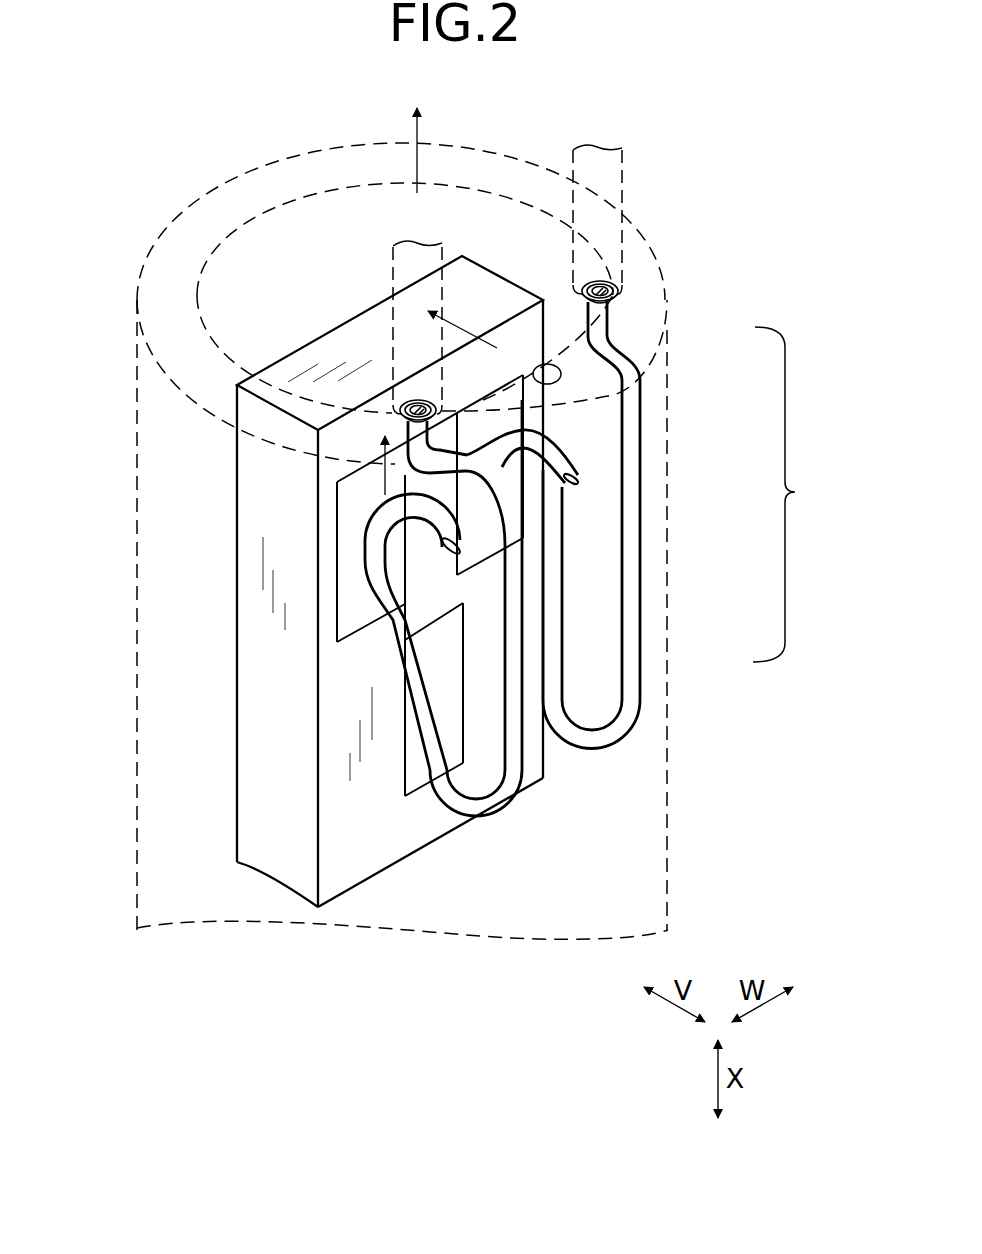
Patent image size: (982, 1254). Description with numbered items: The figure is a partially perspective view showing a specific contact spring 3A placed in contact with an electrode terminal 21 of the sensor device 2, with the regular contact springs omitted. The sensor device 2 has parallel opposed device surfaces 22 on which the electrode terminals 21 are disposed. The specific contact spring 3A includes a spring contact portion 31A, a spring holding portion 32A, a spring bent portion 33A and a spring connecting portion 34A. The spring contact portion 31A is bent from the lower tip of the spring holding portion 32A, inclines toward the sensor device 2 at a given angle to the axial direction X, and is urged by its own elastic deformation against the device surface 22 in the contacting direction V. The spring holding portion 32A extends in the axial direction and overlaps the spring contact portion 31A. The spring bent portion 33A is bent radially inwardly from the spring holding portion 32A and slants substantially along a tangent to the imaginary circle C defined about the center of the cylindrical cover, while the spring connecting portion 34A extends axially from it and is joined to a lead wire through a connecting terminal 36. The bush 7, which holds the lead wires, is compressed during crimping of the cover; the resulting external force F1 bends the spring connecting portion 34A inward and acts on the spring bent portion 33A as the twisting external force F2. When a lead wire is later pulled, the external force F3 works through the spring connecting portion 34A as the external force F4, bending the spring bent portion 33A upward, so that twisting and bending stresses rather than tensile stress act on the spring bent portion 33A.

The sensor device 2 is at (283, 735).
The bush 7 is at (645, 234).
The electrode terminals 21 is at (358, 614).
The device surfaces 22 is at (348, 840).
The spring contact portion 31A is at (375, 558).
The spring holding portion 32A is at (510, 678).
The spring bent portion 33A is at (555, 460).
The spring connecting portion 34A is at (440, 480).
The connecting terminal 36 is at (410, 353).
The specific contact springs 3A is at (802, 494).
The imaginary circle C is at (245, 222).
The external force F1 is at (452, 335).
The external force F2 is at (450, 442).
The external force F3 is at (418, 130).
The external force F4 is at (390, 443).